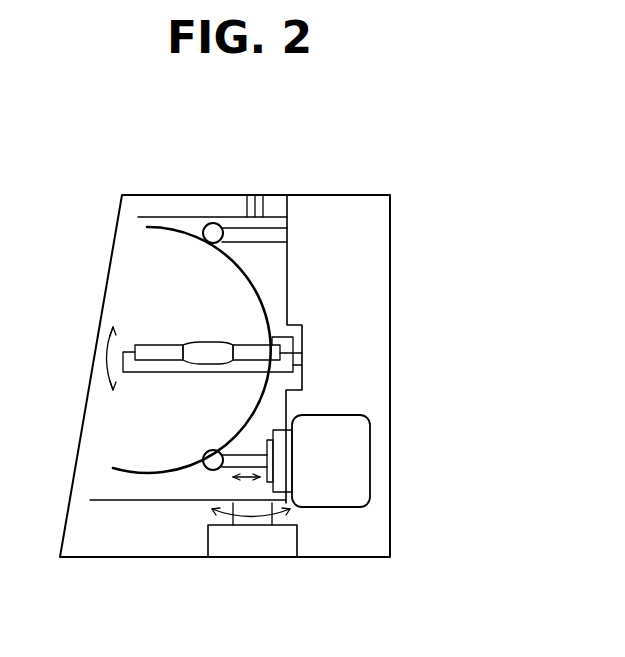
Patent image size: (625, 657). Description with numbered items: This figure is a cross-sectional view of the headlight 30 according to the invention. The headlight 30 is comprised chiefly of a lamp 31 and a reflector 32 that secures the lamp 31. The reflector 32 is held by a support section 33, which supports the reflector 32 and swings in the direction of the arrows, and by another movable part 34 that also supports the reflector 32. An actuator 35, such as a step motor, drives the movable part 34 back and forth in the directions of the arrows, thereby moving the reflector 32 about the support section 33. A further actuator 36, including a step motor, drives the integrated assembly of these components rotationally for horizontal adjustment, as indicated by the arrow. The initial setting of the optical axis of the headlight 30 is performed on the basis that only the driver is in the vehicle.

The headlight 30 is at (165, 193).
The lamp 31 is at (217, 345).
The reflector 32 is at (253, 288).
The support section 33 is at (279, 233).
The movable part 34 is at (225, 466).
The actuator 35 is at (363, 440).
The actuator 36 is at (297, 536).